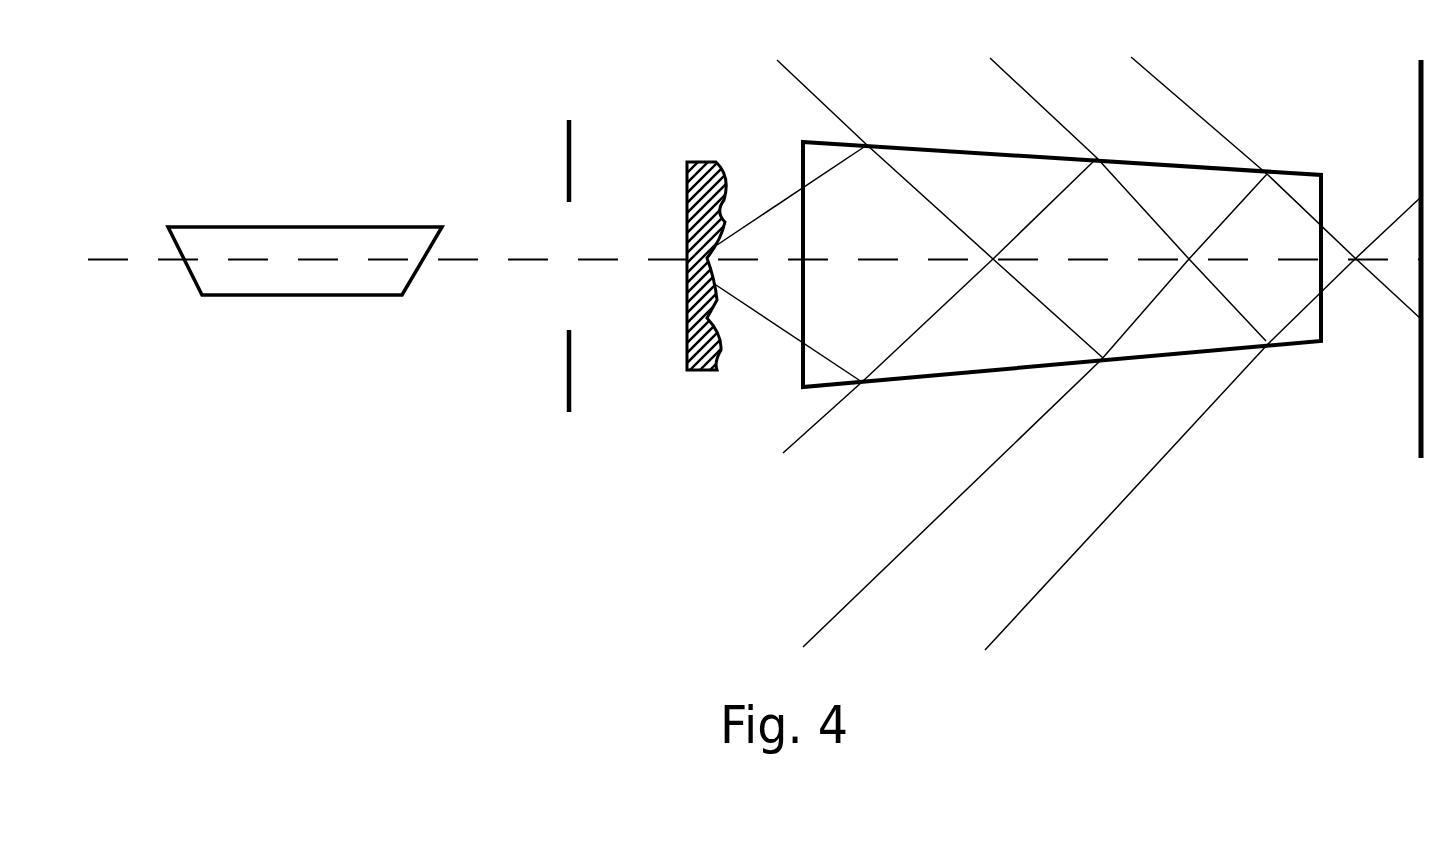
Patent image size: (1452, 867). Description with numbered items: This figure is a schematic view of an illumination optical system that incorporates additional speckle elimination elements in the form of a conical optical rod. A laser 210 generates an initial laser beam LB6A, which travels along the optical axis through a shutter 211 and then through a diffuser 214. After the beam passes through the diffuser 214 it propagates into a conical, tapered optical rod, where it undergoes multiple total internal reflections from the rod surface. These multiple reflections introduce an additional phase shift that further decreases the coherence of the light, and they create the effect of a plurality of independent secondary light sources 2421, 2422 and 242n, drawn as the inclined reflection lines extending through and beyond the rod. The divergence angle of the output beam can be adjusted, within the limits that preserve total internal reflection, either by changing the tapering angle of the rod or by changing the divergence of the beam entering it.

The laser 210 is at (323, 298).
The initial laser beam LB6A is at (482, 262).
The shutter 211 is at (571, 390).
The diffuser 214 is at (697, 372).
The secondary light source 2421 is at (827, 103).
The secondary light source 2422 is at (1033, 100).
The secondary light source 242n is at (1182, 433).